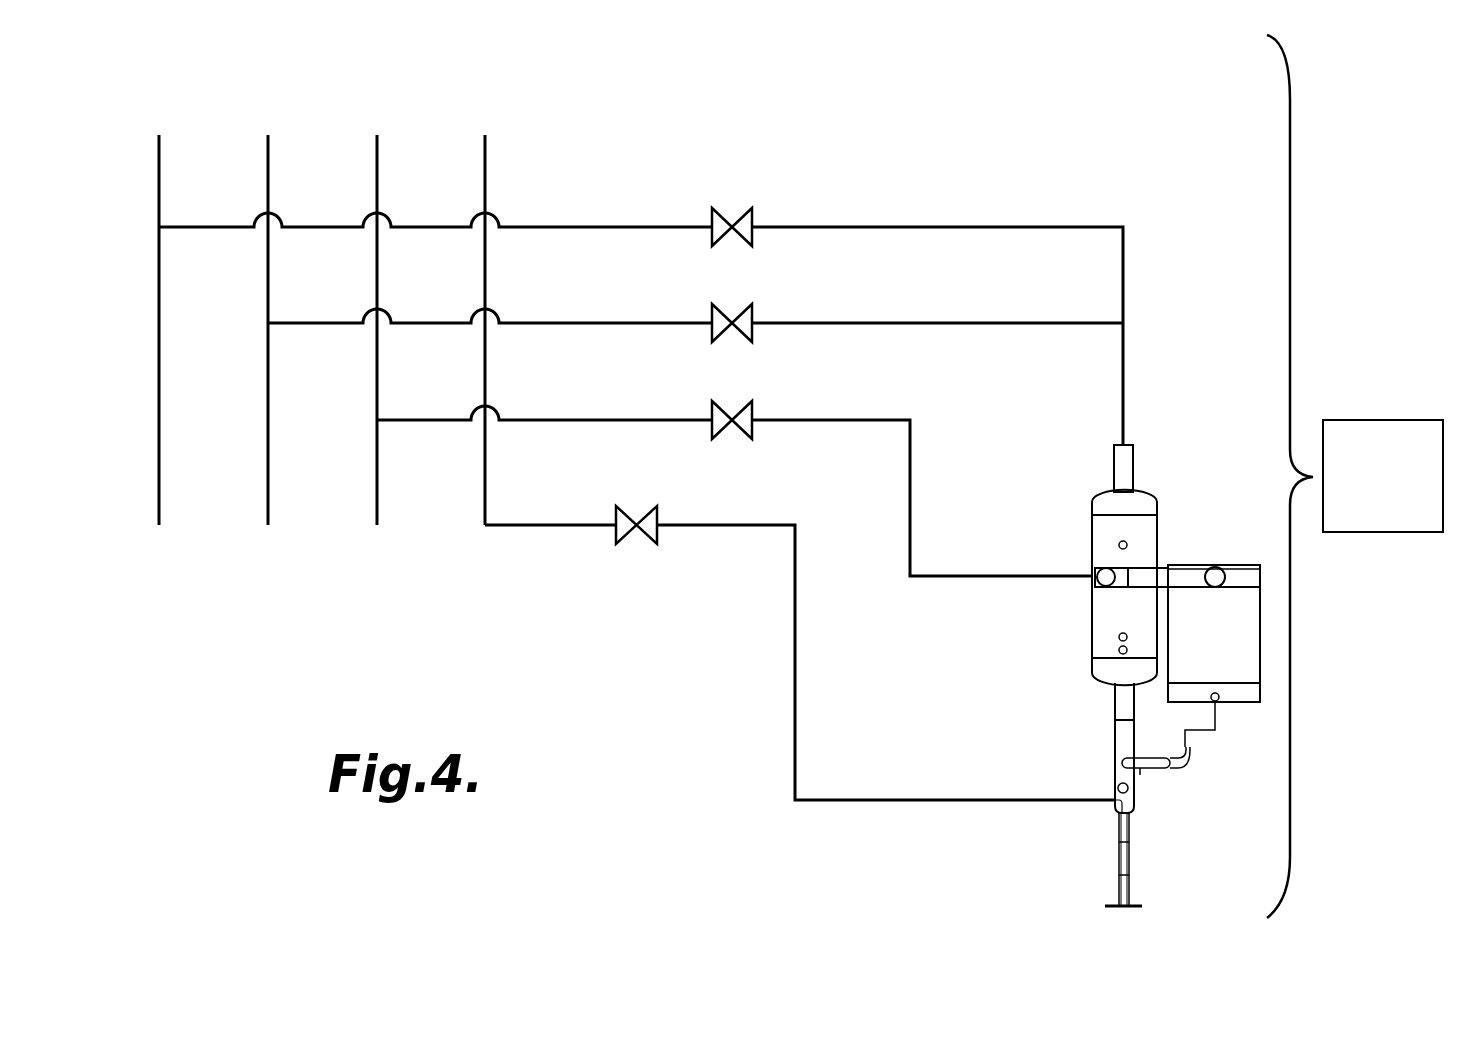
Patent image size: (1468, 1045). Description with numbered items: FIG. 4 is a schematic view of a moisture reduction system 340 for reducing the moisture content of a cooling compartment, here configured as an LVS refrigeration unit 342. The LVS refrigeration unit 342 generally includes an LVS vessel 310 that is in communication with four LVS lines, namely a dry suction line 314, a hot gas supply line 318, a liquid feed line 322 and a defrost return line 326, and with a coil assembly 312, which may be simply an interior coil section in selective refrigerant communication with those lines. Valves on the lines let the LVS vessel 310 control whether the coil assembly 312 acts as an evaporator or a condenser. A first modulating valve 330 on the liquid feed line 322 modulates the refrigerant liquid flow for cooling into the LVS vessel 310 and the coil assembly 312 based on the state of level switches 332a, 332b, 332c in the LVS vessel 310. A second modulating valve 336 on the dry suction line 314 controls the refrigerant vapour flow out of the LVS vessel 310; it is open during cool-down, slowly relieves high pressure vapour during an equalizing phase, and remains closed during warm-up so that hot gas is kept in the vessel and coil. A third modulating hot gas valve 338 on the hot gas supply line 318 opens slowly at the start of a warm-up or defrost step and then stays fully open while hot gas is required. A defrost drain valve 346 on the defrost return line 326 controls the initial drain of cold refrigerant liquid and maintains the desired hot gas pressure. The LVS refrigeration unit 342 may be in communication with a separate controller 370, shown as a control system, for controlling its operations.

The LVS vessel 310 is at (1085, 656).
The coil assembly 312 is at (1235, 665).
The dry suction line 314 is at (159, 182).
The hot gas supply line 318 is at (268, 183).
The liquid feed line 322 is at (377, 183).
The defrost return line 326 is at (485, 183).
The first modulating valve 330 is at (752, 405).
The level switch 332a is at (1120, 649).
The level switch 332b is at (1120, 634).
The level switch 332c is at (1119, 545).
The second modulating valve 336 is at (752, 212).
The third modulating hot gas valve 338 is at (752, 308).
The moisture reduction system 340 is at (1358, 96).
The LVS refrigeration unit 342 is at (655, 580).
The defrost drain valve 346 is at (657, 510).
The controller 370 is at (1385, 420).